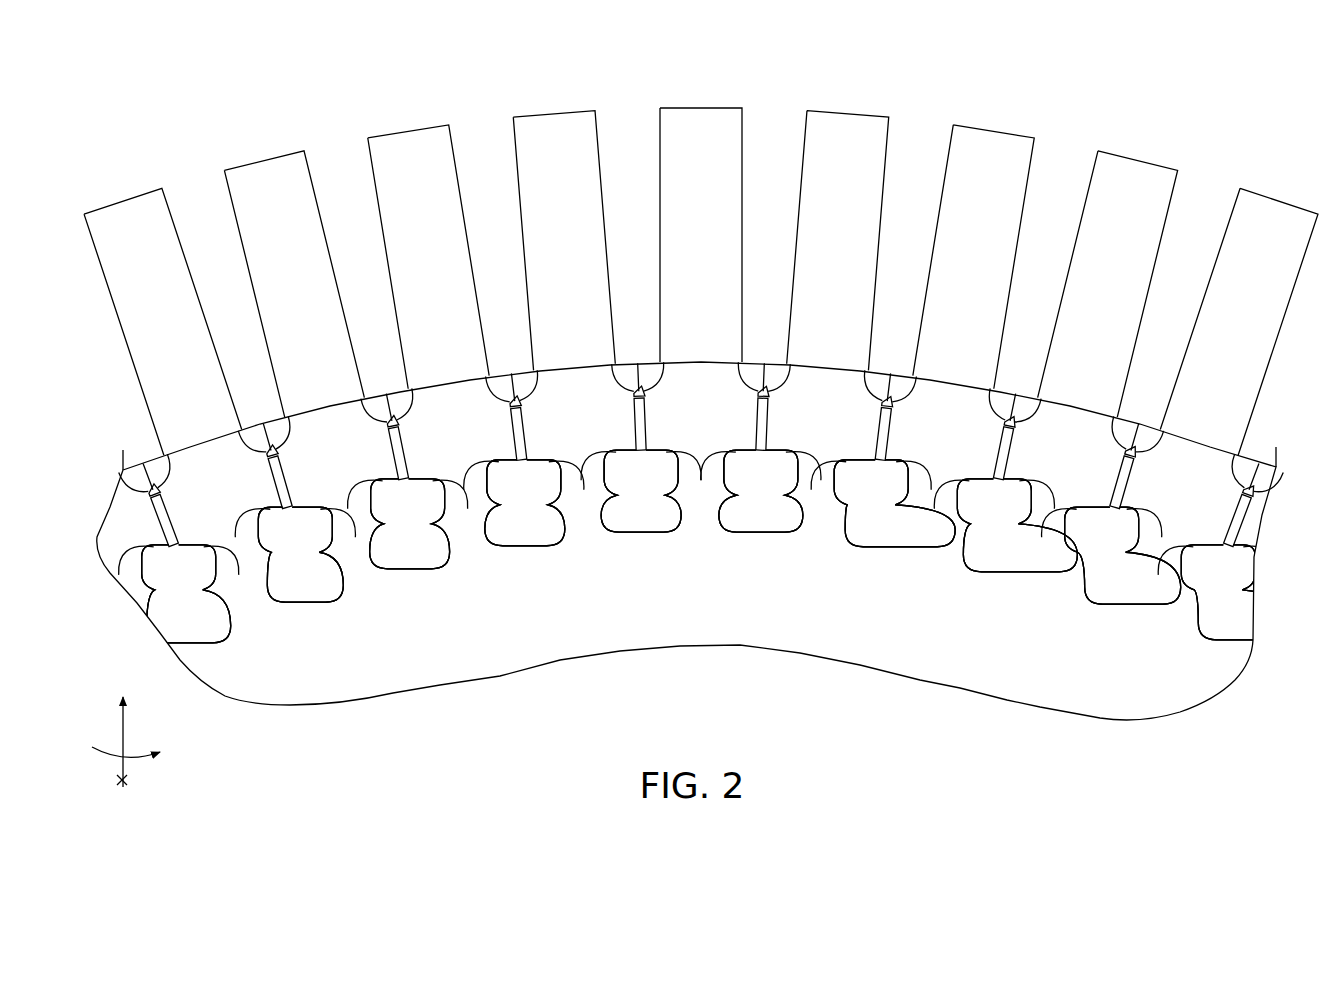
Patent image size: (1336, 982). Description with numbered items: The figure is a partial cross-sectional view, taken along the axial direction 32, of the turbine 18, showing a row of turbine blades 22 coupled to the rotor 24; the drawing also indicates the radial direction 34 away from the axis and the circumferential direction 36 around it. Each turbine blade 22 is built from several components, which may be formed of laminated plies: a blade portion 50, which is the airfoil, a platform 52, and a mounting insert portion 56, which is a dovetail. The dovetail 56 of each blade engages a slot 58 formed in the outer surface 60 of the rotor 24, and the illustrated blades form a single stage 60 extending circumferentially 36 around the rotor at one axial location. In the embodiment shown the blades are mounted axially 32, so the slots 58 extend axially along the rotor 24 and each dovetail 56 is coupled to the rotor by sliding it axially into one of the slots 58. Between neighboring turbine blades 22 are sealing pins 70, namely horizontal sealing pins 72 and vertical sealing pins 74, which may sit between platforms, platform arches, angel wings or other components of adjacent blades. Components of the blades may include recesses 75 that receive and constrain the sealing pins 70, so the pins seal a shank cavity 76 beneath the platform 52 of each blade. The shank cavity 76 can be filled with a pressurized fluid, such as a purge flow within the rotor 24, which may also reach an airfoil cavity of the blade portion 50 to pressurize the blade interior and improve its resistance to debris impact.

The turbine 18 is at (122, 100).
The turbine blade 22 is at (701, 260).
The rotor 24 is at (790, 632).
The axial direction 32 is at (121, 786).
The radial direction 34 is at (120, 718).
The circumferential direction 36 is at (138, 740).
The blade portion 50 is at (259, 275).
The platform 52 is at (150, 455).
The mounting insert portion 56 is at (280, 556).
The slot 58 is at (312, 596).
The outer surface 60 is at (280, 507).
The sealing pin 70 is at (142, 498).
The horizontal sealing pin 72 is at (157, 485).
The vertical sealing pin 74 is at (170, 565).
The recess 75 is at (407, 395).
The shank cavity 76 is at (278, 537).